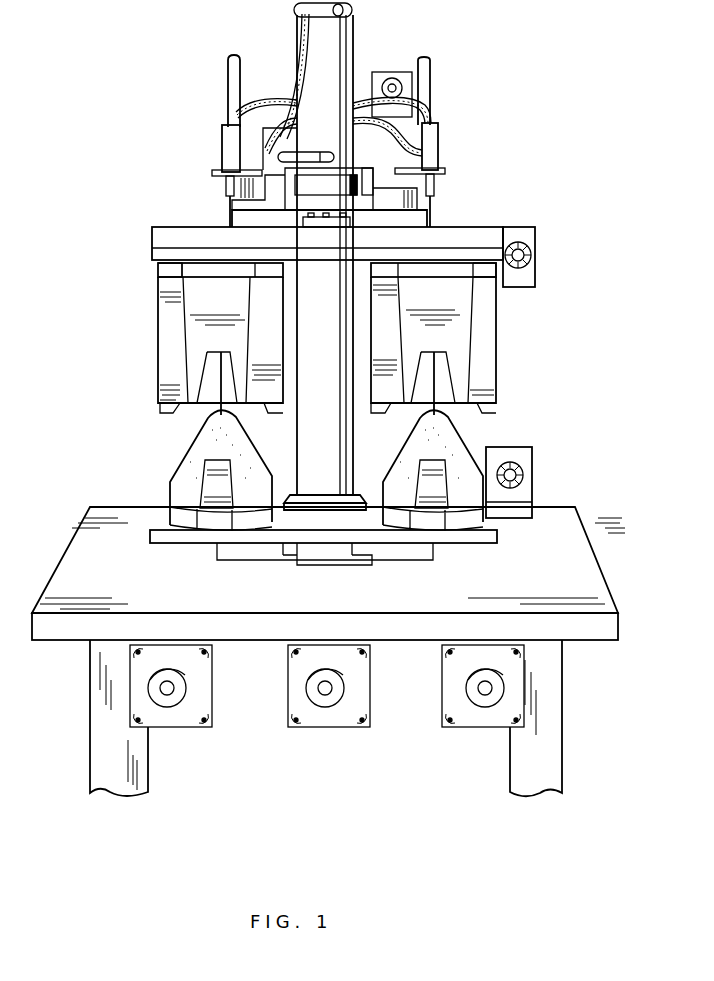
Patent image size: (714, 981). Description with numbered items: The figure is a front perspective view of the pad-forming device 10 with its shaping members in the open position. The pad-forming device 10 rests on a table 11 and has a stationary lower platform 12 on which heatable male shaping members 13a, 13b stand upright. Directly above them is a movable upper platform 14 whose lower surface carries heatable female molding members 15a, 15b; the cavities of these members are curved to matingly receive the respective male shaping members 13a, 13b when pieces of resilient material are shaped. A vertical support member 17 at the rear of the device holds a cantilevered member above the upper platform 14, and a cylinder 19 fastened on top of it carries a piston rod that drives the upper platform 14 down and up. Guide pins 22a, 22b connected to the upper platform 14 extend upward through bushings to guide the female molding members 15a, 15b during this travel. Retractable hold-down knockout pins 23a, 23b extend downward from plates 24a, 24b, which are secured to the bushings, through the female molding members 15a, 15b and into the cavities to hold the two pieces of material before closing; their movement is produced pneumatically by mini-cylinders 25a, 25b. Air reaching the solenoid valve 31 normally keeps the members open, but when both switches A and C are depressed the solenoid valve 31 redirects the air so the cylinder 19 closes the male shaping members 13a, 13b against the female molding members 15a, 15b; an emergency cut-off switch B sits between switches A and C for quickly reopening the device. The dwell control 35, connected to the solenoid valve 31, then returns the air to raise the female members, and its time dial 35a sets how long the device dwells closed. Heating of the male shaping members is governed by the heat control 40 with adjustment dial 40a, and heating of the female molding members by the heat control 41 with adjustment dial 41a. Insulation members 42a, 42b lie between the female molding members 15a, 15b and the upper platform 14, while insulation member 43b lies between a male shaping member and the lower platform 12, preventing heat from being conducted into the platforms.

The pad-forming device 10 is at (482, 84).
The table 11 is at (586, 549).
The stationary lower platform 12 is at (497, 537).
The male shaping member 13a is at (177, 472).
The male shaping member 13b is at (458, 432).
The movable upper platform 14 is at (152, 241).
The female molding member 15a is at (158, 335).
The female molding member 15b is at (490, 337).
The vertical support member 17 is at (335, 432).
The cylinder 19 is at (356, 45).
The guide pin 22a is at (228, 76).
The guide pin 22b is at (430, 66).
The hold-down knockout pin 23a is at (228, 224).
The hold-down knockout pin 23b is at (436, 217).
The plate 24a is at (214, 174).
The plate 24b is at (443, 171).
The mini-cylinder 25a is at (222, 156).
The mini-cylinder 25b is at (438, 134).
The solenoid valve 31 is at (264, 147).
The dwell control 35 is at (404, 72).
The time dial 35a is at (392, 78).
The heat control 40 is at (533, 486).
The adjustment dial 40a is at (521, 470).
The heat control 41 is at (535, 233).
The adjustment dial 41a is at (532, 255).
The insulation member 42a is at (160, 270).
The insulation member 42b is at (485, 272).
The insulation member 43b is at (211, 520).
The switch A is at (170, 727).
The emergency cut-off switch B is at (318, 727).
The switch C is at (487, 727).